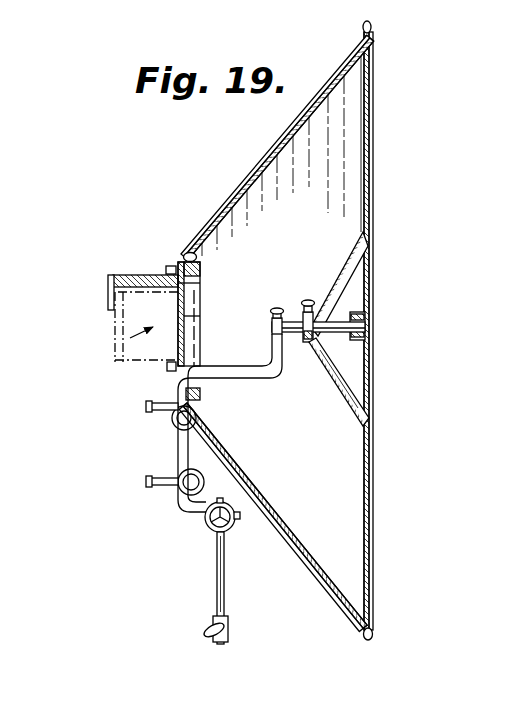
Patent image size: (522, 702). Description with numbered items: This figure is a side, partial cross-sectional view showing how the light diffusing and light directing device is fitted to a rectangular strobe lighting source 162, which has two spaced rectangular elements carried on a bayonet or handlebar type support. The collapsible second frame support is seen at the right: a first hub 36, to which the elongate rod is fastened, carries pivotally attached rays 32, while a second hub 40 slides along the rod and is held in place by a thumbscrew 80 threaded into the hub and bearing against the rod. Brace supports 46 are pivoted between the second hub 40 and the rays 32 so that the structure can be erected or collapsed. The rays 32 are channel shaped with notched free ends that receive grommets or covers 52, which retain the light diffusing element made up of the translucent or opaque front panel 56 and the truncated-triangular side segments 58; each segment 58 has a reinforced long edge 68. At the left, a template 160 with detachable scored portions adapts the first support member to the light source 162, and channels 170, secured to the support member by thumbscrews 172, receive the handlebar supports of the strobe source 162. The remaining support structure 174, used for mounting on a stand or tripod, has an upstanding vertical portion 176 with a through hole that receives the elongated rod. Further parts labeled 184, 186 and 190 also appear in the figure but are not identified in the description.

The rays 32 is at (368, 391).
The first hub 36 is at (372, 317).
The second hub 40 is at (336, 331).
The brace supports 46 is at (345, 393).
The grommets or covers 52 is at (376, 634).
The front panel 56 is at (375, 497).
The conformable segments 58 is at (266, 153).
The long edge 68 is at (352, 62).
The thumbscrew 80 is at (308, 301).
The template 160 is at (196, 321).
The strobe lighting source 162 is at (120, 340).
The channels 170 is at (125, 276).
The thumbscrews 172 is at (191, 252).
The support structure 174 is at (208, 553).
The upstanding vertical portion 176 is at (272, 358).
The down pipe 184 is at (176, 440).
The ring 186 is at (200, 476).
The bracket 190 is at (147, 406).